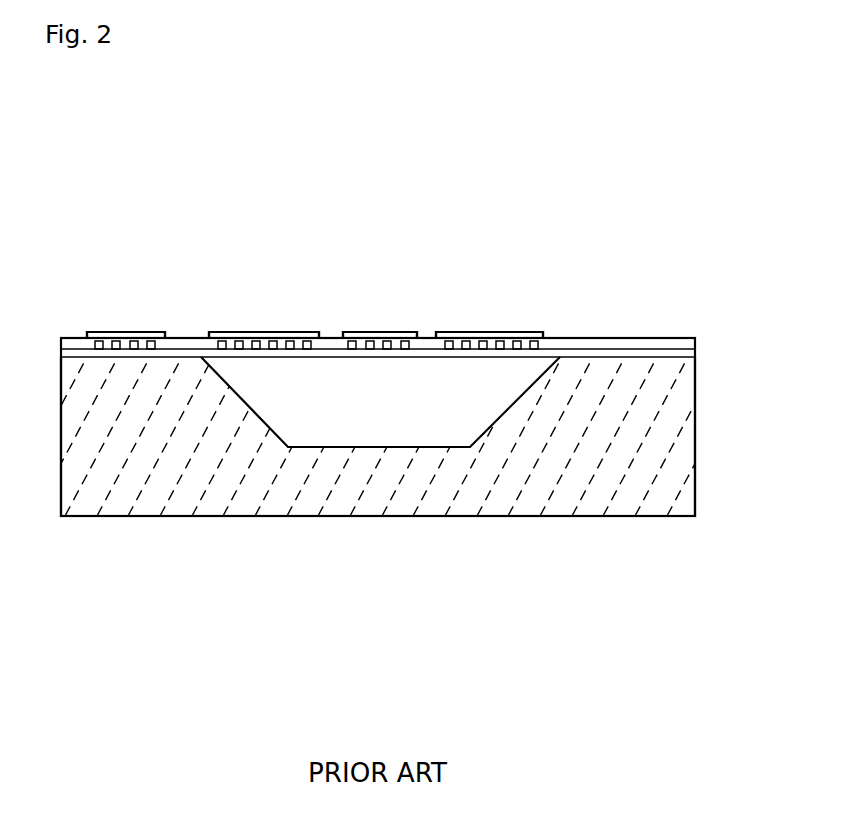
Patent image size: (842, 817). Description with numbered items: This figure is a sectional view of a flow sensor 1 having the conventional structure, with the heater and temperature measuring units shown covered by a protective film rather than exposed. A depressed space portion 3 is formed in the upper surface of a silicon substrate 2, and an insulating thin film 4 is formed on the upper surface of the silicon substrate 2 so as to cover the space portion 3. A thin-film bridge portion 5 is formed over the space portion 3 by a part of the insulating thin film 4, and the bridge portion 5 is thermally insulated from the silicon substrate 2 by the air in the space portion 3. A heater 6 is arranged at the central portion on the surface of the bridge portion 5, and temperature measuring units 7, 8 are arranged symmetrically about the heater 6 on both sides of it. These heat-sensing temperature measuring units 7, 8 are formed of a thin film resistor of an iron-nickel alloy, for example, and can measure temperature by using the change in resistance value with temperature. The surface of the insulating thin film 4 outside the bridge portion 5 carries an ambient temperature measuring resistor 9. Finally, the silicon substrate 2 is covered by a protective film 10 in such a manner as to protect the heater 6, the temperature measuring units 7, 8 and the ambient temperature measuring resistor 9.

The flow sensor 1 is at (675, 253).
The silicon substrate 2 is at (648, 423).
The space portion 3 is at (432, 447).
The insulating thin film 4 is at (598, 357).
The bridge portion 5 is at (342, 358).
The heater 6 is at (380, 345).
The temperature measuring unit 7 is at (270, 345).
The temperature measuring unit 8 is at (493, 345).
The ambient temperature measuring resistor 9 is at (135, 340).
The protective film 10 is at (187, 338).